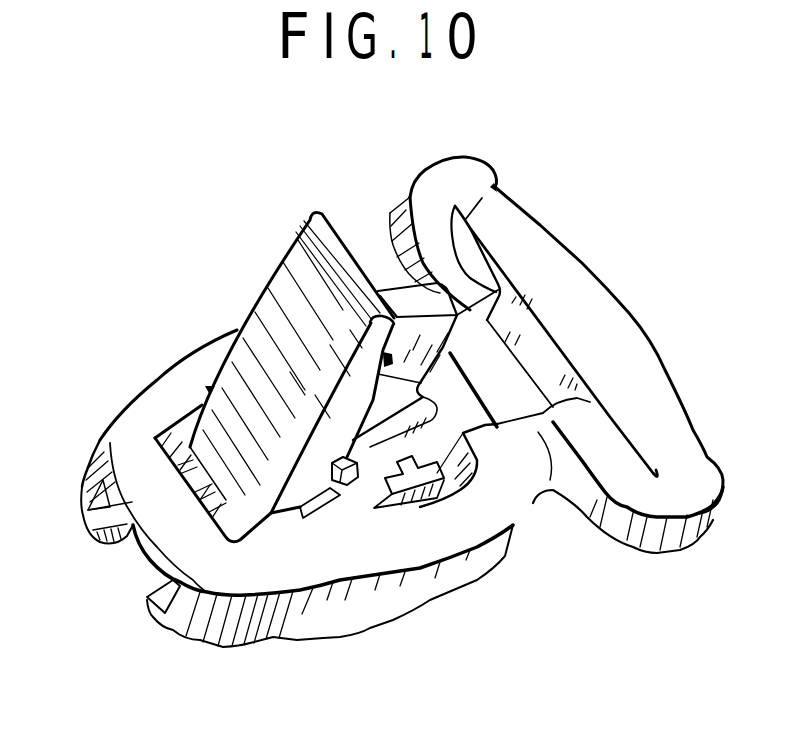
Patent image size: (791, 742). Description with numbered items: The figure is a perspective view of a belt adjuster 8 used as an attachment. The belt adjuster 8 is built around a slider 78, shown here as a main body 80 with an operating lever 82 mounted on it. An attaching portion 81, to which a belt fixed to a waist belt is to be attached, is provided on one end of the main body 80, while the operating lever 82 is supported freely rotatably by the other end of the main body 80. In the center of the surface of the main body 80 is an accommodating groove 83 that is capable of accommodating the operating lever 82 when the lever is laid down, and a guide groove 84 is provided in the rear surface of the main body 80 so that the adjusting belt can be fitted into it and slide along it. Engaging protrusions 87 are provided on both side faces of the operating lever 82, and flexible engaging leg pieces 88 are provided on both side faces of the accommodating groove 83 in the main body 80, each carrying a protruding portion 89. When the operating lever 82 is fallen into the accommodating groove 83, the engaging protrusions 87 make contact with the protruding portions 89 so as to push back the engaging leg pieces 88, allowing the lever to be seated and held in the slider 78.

The belt adjuster 8 is at (630, 284).
The slider 78 is at (414, 165).
The main body 80 is at (343, 562).
The attaching portion 81 is at (612, 337).
The operating lever 82 is at (285, 303).
The accommodating groove 83 is at (467, 413).
The guide groove 84 is at (140, 560).
The engaging protrusions 87 is at (297, 518).
The engaging leg pieces 88 is at (403, 490).
The protruding portions 89 is at (440, 497).